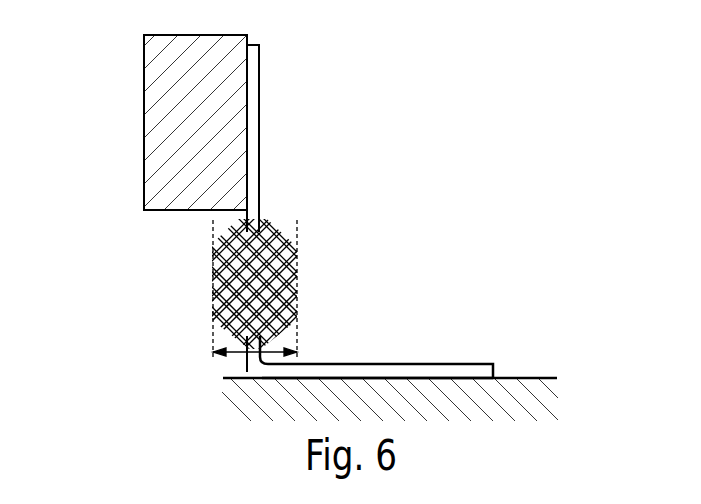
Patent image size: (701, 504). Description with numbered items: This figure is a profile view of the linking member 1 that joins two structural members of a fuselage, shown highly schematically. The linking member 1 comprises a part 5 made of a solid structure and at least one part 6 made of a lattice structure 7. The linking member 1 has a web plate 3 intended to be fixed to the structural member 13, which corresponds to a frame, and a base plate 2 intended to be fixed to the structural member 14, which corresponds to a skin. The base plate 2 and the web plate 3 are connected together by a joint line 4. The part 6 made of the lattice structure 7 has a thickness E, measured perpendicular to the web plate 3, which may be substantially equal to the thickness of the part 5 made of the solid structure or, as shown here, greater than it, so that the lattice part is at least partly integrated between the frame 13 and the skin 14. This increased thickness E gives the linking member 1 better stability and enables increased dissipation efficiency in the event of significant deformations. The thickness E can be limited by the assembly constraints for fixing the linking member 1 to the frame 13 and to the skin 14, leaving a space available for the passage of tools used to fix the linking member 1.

The linking member 1 is at (440, 162).
The base plate 2 is at (443, 372).
The web plate 3 is at (247, 125).
The joint line 4 is at (252, 368).
The part made of a solid structure 5 is at (253, 168).
The part made of a lattice structure 6 is at (293, 258).
The lattice structure 7 is at (213, 281).
The structural member 13 is at (190, 127).
The structural member 14 is at (320, 401).
The thickness E is at (245, 366).